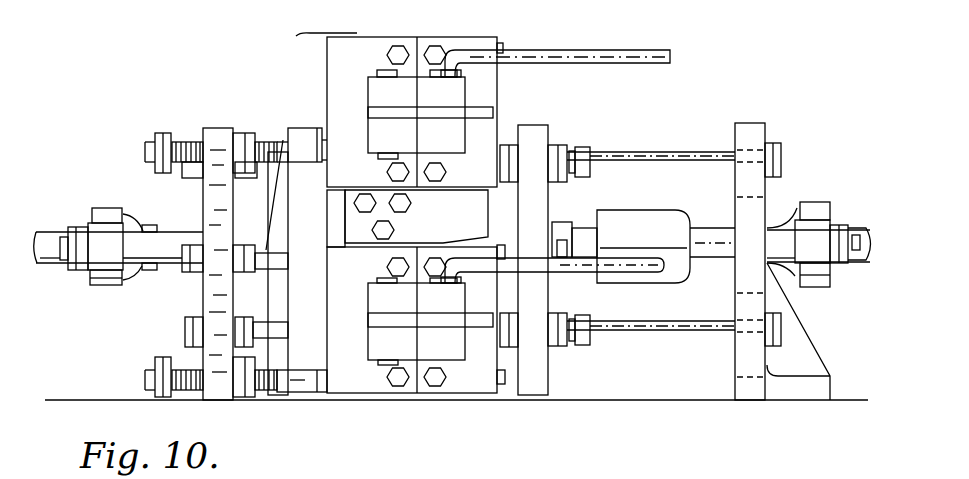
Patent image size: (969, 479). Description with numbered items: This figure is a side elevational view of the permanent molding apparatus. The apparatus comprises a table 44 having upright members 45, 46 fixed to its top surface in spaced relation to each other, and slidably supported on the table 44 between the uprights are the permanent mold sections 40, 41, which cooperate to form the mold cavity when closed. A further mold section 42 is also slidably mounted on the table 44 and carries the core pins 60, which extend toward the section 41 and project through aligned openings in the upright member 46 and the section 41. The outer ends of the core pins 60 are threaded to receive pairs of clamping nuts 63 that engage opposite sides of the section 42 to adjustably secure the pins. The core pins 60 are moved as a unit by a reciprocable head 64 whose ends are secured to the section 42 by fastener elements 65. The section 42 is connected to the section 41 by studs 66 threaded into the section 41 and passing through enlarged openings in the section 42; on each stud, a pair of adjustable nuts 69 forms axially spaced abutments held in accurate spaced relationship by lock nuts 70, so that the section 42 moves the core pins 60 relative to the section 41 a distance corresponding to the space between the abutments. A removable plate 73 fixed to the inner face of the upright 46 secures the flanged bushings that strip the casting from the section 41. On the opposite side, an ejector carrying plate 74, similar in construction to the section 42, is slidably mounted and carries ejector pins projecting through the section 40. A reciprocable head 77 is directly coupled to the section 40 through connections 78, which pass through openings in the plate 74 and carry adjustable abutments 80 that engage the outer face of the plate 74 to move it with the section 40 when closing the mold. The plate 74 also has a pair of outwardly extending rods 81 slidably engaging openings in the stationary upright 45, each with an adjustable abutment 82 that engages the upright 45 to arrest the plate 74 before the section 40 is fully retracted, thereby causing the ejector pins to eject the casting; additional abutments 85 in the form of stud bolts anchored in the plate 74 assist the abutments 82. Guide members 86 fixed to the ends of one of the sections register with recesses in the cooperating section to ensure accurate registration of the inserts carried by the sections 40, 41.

The permanent mold section 40 is at (466, 33).
The permanent mold section 41 is at (299, 36).
The mold section 42 is at (214, 140).
The table 44 is at (108, 399).
The upright member 45 is at (741, 278).
The upright member 46 is at (300, 204).
The core pins 60 is at (275, 322).
The clamping nuts 63 is at (196, 316).
The reciprocable head 64 is at (102, 284).
The fastener elements 65 is at (168, 240).
The studs 66 is at (284, 137).
The adjustable nuts 69 is at (170, 133).
The lock nuts 70 is at (160, 132).
The removable plate 73 is at (321, 236).
The ejector carrying plate 74 is at (546, 360).
The reciprocable head 77 is at (822, 208).
The connections 78 is at (655, 216).
The adjustable abutments 80 is at (560, 222).
The rods 81 is at (648, 152).
The abutment 82 is at (578, 322).
The additional abutments 85 is at (598, 143).
The guide members 86 is at (453, 197).